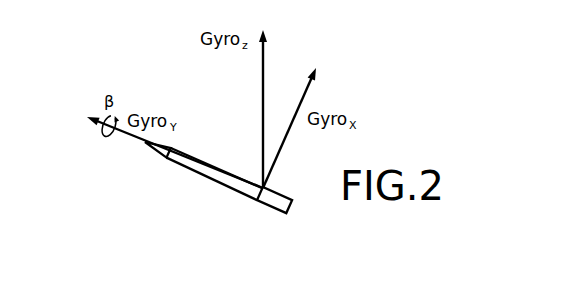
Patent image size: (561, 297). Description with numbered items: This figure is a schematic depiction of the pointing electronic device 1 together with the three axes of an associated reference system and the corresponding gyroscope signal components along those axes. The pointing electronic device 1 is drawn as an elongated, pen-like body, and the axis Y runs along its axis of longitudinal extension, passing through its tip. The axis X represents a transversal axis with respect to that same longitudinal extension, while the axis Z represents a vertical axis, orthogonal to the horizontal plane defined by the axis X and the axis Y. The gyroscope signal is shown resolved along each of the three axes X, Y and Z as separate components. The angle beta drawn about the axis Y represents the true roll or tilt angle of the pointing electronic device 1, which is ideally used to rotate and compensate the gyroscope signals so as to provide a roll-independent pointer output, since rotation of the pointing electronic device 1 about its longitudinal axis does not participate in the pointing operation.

The pointing electronic device 1 is at (270, 212).
The axis X is at (295, 117).
The axis Y is at (170, 143).
The axis Z is at (263, 98).